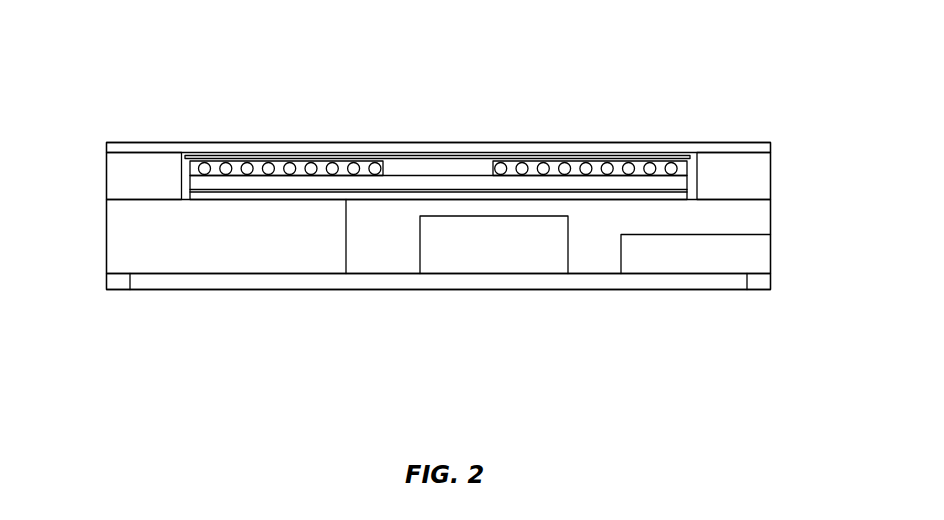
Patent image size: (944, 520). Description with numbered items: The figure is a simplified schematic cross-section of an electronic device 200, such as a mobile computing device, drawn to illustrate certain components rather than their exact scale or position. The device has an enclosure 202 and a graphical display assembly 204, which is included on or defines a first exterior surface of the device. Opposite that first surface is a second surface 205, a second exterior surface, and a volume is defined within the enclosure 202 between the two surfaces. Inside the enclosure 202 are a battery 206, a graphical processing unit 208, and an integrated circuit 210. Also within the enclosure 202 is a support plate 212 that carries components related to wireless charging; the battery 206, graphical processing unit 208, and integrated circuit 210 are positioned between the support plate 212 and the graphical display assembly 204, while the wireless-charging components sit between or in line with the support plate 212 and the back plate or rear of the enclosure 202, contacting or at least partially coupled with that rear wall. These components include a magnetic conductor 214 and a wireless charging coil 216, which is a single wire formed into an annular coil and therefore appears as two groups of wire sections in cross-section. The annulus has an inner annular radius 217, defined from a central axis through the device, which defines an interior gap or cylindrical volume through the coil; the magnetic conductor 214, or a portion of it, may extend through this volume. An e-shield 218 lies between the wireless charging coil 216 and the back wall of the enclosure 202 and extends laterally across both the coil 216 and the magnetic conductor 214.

The electronic device 200 is at (193, 99).
The enclosure 202 is at (772, 217).
The graphical display assembly 204 is at (168, 292).
The second surface 205 is at (495, 142).
The battery 206 is at (105, 232).
The graphical processing unit 208 is at (418, 262).
The integrated circuit 210 is at (620, 262).
The support plate 212 is at (105, 171).
The magnetic conductor 214 is at (683, 173).
The wireless charging coil 216 is at (603, 166).
The inner annular radius 217 is at (385, 168).
The e-shield 218 is at (253, 155).